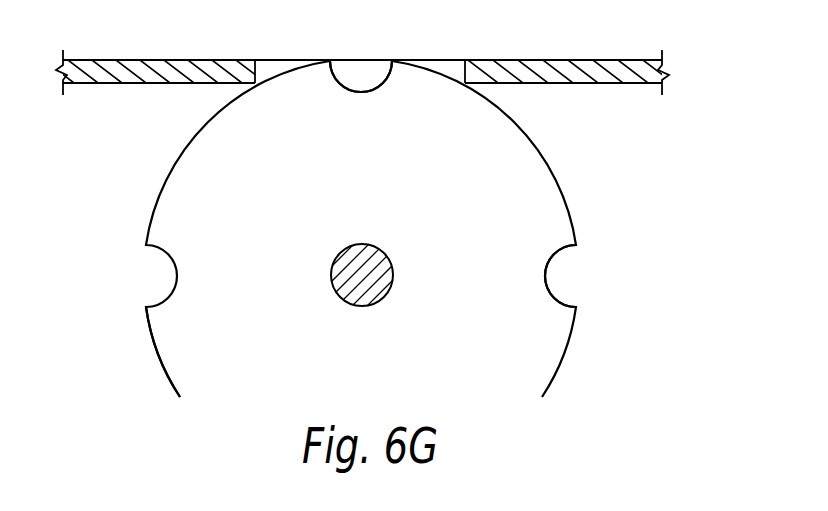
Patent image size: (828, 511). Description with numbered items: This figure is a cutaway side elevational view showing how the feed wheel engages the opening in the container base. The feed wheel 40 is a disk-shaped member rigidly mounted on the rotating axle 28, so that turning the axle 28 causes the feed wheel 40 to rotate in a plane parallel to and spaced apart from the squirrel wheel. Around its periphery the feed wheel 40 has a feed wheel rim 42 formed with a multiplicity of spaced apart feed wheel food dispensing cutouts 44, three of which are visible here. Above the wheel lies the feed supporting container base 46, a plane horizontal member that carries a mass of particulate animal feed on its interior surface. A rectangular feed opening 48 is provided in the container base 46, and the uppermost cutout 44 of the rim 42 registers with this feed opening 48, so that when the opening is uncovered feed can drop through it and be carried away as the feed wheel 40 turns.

The axle 28 is at (393, 275).
The feed wheel 40 is at (361, 229).
The feed wheel rim 42 is at (553, 163).
The feed wheel food dispensing cutouts 44 is at (355, 90).
The feed supporting container base 46 is at (192, 60).
The feed opening 48 is at (445, 68).